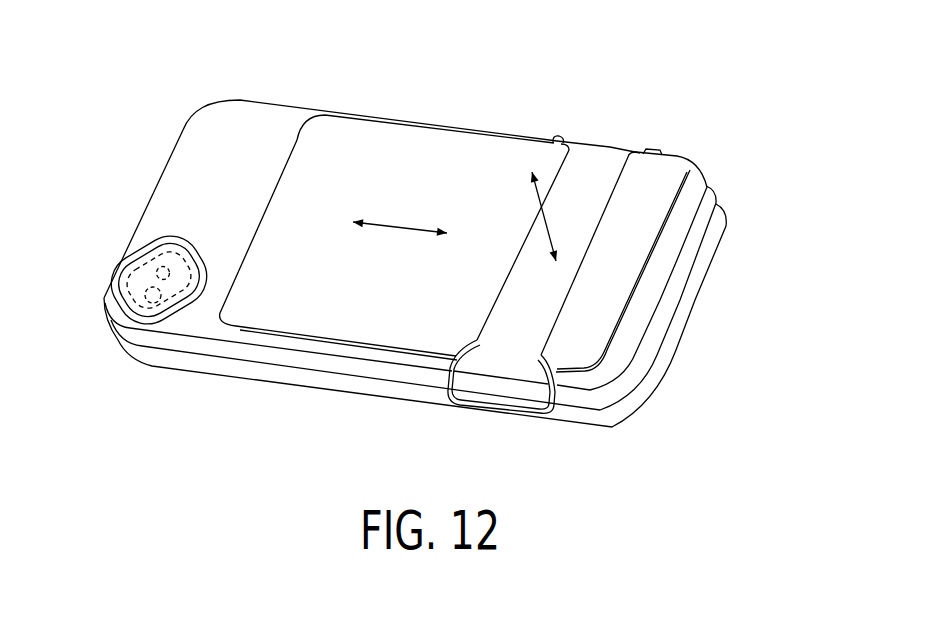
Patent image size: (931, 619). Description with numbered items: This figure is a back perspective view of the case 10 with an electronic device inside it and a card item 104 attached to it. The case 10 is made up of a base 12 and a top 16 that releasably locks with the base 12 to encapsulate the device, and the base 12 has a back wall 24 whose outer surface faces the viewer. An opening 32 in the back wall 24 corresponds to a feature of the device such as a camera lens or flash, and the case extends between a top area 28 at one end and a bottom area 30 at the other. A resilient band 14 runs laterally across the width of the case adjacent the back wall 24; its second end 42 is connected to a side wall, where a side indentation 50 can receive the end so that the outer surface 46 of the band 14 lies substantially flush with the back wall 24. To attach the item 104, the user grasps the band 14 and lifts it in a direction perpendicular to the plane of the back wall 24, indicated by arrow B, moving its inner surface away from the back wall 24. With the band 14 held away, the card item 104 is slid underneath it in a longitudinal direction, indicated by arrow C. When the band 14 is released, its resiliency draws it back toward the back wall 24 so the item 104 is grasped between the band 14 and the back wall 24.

The case 10 is at (160, 85).
The base 12 is at (252, 101).
The resilient band 14 is at (612, 209).
The top 16 is at (637, 415).
The back wall 24 is at (297, 115).
The top area 28 is at (140, 205).
The bottom area 30 is at (695, 275).
The opening 32 is at (107, 305).
The second end 42 is at (493, 393).
The outer surface 46 is at (588, 166).
The side indentation 50 is at (553, 420).
The item 104 is at (662, 165).
The arrow B is at (537, 191).
The arrow C is at (400, 225).